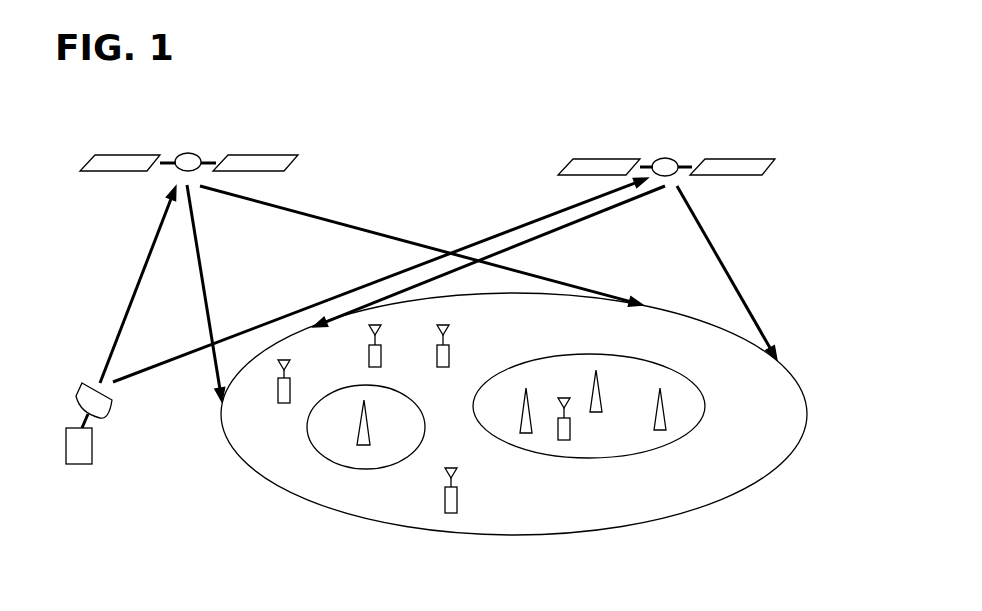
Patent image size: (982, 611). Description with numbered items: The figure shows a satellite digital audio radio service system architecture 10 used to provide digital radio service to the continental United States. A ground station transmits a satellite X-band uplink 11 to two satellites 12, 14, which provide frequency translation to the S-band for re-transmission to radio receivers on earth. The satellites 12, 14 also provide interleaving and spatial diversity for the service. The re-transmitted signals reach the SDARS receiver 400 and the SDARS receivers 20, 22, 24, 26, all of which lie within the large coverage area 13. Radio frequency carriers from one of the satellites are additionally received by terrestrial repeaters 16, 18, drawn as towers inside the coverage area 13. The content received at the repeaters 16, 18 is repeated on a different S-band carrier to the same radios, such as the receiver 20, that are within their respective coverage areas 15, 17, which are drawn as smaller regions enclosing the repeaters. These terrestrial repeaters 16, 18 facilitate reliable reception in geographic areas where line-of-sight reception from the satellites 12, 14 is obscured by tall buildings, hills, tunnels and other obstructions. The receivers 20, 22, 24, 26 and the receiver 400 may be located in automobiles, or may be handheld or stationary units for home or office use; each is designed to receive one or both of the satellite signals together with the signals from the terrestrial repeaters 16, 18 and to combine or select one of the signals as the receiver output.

The satellite digital audio radio service system architecture 10 is at (50, 111).
The satellite X-band uplink 11 is at (63, 441).
The satellite 12 is at (308, 164).
The coverage area 13 is at (807, 392).
The satellite 14 is at (790, 165).
The coverage area of terrestrial repeater 15 is at (706, 406).
The terrestrial repeater 16 is at (522, 426).
The coverage area of terrestrial repeater 17 is at (423, 416).
The terrestrial repeater 18 is at (373, 432).
The SDARS receiver 20 is at (571, 433).
The SDARS receiver 22 is at (458, 500).
The SDARS receiver 24 is at (450, 356).
The SDARS receiver 26 is at (291, 390).
The SDARS receiver 400 is at (382, 356).